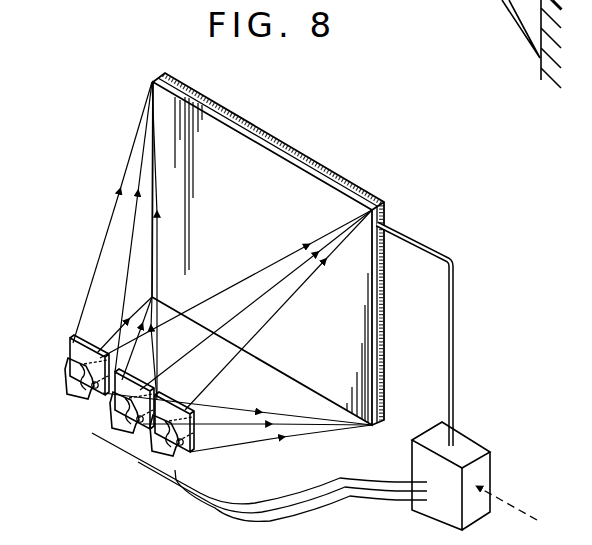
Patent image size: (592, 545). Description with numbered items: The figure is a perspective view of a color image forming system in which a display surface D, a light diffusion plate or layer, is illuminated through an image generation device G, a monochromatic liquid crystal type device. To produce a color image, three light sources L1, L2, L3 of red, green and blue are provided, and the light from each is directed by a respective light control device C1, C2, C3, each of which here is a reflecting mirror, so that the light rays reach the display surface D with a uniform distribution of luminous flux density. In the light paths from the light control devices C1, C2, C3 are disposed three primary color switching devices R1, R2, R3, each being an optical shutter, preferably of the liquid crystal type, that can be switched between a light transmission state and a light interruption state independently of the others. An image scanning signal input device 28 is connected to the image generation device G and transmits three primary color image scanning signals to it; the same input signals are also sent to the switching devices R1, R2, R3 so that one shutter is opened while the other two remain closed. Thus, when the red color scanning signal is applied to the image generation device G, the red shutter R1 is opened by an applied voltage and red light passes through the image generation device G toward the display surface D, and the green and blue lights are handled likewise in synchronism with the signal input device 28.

The display surface D is at (277, 137).
The image generation device G is at (253, 140).
The image scanning signal input device 28 is at (482, 465).
The primary color switching device R1 is at (94, 350).
The primary color switching device R2 is at (156, 397).
The primary color switching device R3 is at (199, 438).
The light control device C1 is at (64, 385).
The light control device C2 is at (109, 435).
The light control device C3 is at (159, 470).
The light source L1 is at (74, 412).
The light source L2 is at (118, 459).
The light source L3 is at (170, 491).